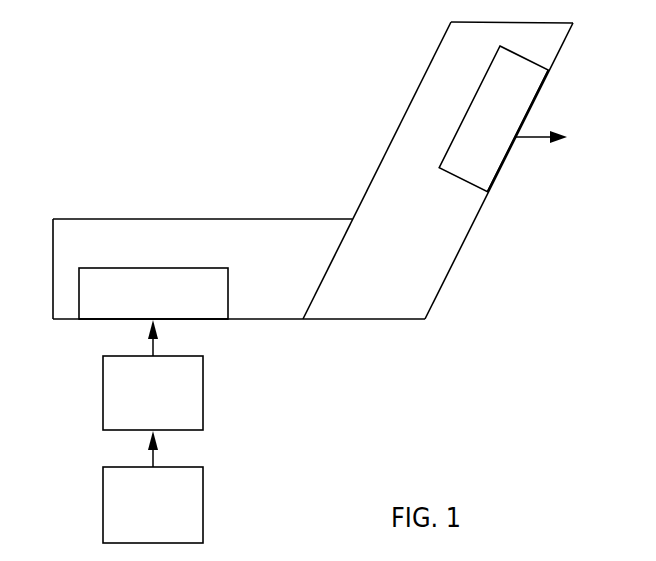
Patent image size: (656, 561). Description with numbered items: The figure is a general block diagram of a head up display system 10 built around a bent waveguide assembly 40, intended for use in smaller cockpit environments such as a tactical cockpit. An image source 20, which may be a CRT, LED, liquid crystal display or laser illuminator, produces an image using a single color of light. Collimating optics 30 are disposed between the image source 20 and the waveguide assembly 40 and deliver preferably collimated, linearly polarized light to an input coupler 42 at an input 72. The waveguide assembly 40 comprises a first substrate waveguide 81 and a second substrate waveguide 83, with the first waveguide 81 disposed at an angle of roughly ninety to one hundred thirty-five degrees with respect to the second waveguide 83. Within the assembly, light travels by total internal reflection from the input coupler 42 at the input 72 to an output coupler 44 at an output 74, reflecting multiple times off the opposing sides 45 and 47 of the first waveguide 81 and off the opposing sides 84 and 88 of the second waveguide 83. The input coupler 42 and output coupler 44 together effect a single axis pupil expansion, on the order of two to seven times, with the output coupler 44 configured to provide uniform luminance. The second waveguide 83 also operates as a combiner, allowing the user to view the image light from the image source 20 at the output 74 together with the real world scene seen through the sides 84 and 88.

The head up display (HUD) system 10 is at (178, 60).
The image source 20 is at (103, 518).
The collimating optics 30 is at (103, 417).
The waveguide assembly 40 is at (318, 164).
The input coupler 42 is at (108, 320).
The output coupler 44 is at (543, 84).
The side of first substrate waveguide 45 is at (91, 219).
The side of first substrate waveguide 47 is at (60, 320).
The input 72 is at (203, 320).
The output 74 is at (496, 176).
The first substrate waveguide 81 is at (229, 219).
The second substrate waveguide 83 is at (398, 320).
The side of second substrate waveguide 84 is at (398, 129).
The side of second substrate waveguide 88 is at (460, 250).